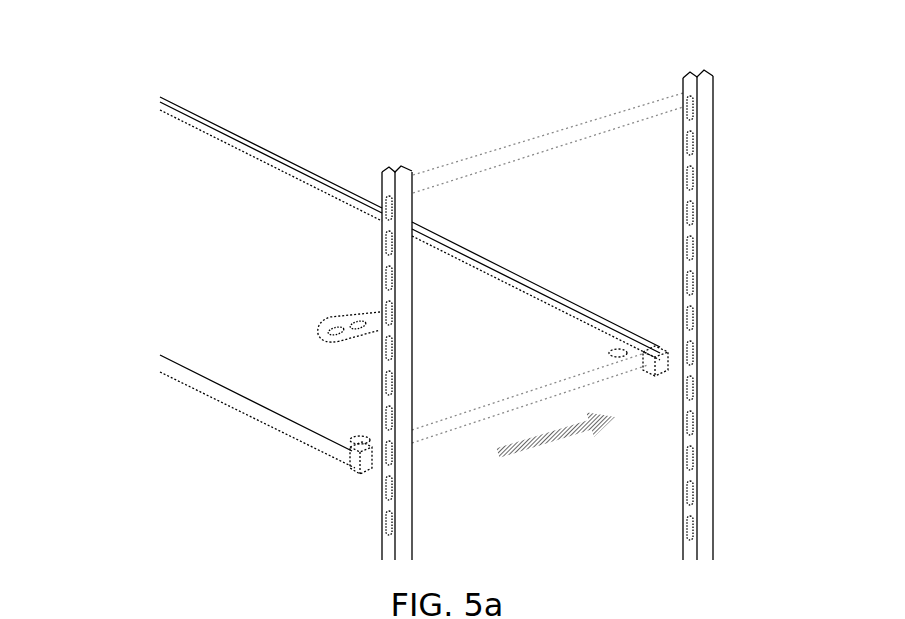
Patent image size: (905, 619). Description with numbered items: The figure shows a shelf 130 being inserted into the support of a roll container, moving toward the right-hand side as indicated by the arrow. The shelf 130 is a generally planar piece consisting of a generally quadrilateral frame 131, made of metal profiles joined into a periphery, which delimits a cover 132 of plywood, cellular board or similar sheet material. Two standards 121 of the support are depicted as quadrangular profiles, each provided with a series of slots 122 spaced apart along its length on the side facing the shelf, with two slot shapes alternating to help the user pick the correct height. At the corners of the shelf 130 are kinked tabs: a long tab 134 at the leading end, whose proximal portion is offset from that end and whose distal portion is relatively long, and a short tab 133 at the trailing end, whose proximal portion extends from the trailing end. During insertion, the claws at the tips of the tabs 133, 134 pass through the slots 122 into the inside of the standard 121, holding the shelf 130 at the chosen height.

The shelf 130 is at (187, 90).
The frame 131 is at (250, 147).
The cover 132 is at (288, 198).
The standard 121 is at (392, 168).
The slot 122 is at (384, 541).
The short tab 133 is at (360, 474).
The long tab 134 is at (670, 368).